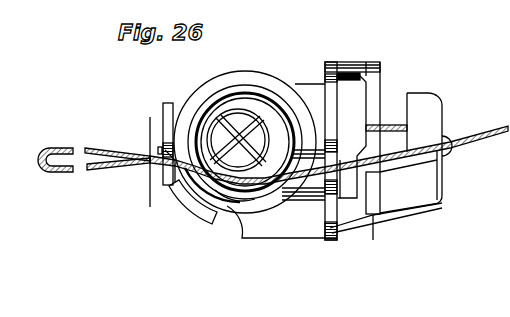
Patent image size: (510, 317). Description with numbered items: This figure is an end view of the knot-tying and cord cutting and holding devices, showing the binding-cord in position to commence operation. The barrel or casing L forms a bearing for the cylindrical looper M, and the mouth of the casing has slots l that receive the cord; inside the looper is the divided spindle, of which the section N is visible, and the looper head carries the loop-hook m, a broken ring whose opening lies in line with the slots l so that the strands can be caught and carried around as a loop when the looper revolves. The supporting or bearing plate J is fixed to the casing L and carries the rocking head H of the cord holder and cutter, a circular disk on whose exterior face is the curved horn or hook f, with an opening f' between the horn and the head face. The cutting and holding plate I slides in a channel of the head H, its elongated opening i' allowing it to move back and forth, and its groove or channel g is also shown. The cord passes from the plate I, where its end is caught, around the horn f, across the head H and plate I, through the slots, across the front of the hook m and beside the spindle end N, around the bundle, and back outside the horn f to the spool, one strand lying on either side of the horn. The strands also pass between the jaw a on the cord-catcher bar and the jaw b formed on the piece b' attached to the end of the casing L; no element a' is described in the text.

The looper M is at (262, 76).
The barrel or casing L is at (226, 90).
The spindle section N is at (238, 140).
The loop-hook m is at (186, 100).
The jaw or shoulder a is at (151, 176).
The rod a' is at (149, 147).
The jaw or shoulder b is at (156, 143).
The piece b' is at (248, 203).
The slots l is at (158, 154).
The supporting or bearing plate J is at (352, 151).
The cutting and holding plate I is at (359, 151).
The elongated opening i' is at (344, 167).
The groove or channel g is at (371, 193).
The rocking head H is at (386, 163).
The horn or hook f is at (429, 124).
The opening f' is at (386, 116).